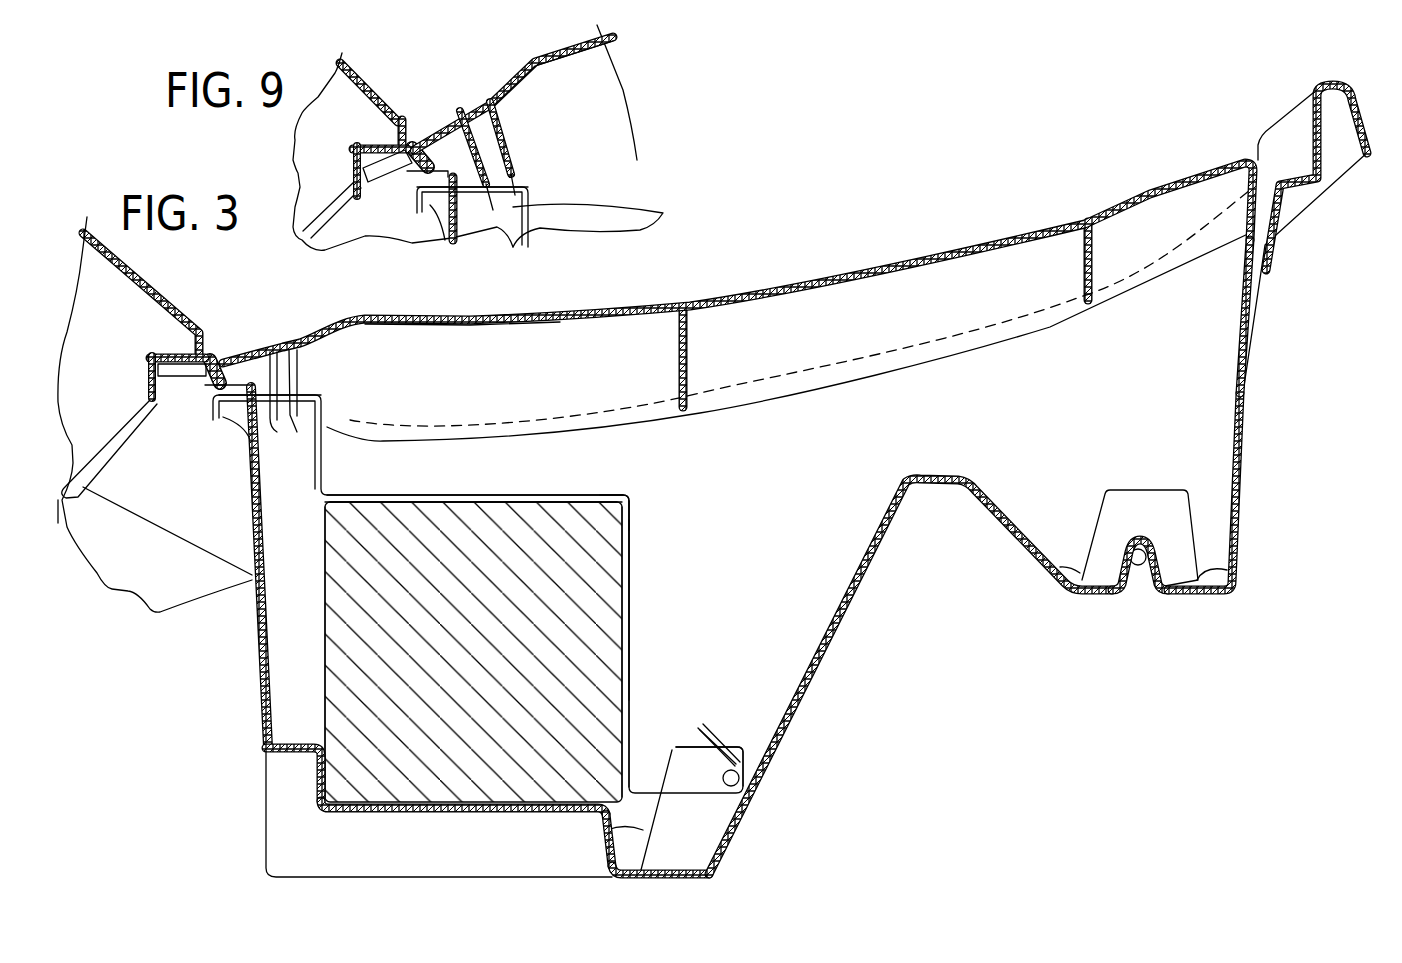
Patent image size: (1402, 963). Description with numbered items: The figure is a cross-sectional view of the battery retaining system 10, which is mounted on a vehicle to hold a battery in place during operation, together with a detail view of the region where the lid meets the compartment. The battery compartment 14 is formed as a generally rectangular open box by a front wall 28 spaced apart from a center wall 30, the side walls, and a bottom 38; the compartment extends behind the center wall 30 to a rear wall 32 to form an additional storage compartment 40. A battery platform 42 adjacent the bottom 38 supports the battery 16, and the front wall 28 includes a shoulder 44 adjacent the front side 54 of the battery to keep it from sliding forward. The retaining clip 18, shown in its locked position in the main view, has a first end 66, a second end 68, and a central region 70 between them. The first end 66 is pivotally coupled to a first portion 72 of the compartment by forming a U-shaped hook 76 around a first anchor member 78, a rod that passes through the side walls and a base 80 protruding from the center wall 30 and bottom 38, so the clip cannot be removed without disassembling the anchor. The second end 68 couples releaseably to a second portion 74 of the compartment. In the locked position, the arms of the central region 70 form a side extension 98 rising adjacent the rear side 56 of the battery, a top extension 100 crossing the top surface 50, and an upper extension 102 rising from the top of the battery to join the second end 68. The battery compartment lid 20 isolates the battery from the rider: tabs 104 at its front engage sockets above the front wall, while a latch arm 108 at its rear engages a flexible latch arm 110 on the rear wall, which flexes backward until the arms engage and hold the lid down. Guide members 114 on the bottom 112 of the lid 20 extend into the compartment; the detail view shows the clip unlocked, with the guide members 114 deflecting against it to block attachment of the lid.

In FIG. 3, the battery retaining system 10 is at (624, 291).
In FIG. 9, the battery retaining system 10 is at (548, 47).
In FIG. 3, the battery compartment 14 is at (692, 487).
In FIG. 3, the battery 16 is at (333, 591).
In FIG. 3, the retaining clip 18 is at (635, 491).
In FIG. 3, the battery compartment lid 20 is at (816, 282).
In FIG. 9, the battery compartment lid 20 is at (513, 67).
In FIG. 3, the front wall 28 is at (273, 560).
In FIG. 9, the front wall 28 is at (470, 232).
In FIG. 3, the center wall 30 is at (870, 544).
In FIG. 3, the rear wall 32 is at (1232, 343).
In FIG. 3, the bottom 38 is at (677, 882).
In FIG. 3, the storage compartment 40 is at (1127, 458).
In FIG. 3, the battery platform 42 is at (373, 812).
In FIG. 3, the shoulder 44 is at (300, 746).
In FIG. 3, the top surface 50 is at (460, 496).
In FIG. 3, the front side 54 is at (322, 675).
In FIG. 3, the rear side 56 is at (633, 565).
In FIG. 3, the first end 66 is at (700, 728).
In FIG. 3, the second end 68 is at (315, 395).
In FIG. 9, the second end 68 is at (521, 186).
In FIG. 3, the central region 70 is at (563, 496).
In FIG. 3, the first portion 72 is at (735, 735).
In FIG. 3, the second portion 74 is at (247, 418).
In FIG. 9, the second portion 74 is at (433, 203).
In FIG. 3, the hook 76 is at (744, 757).
In FIG. 3, the first anchor member 78 is at (723, 777).
In FIG. 3, the base 80 is at (645, 830).
In FIG. 3, the side extension 98 is at (632, 630).
In FIG. 3, the top extension 100 is at (483, 496).
In FIG. 3, the upper extension 102 is at (327, 457).
In FIG. 9, the upper extension 102 is at (541, 226).
In FIG. 3, the tabs 104 is at (173, 378).
In FIG. 9, the tabs 104 is at (378, 173).
In FIG. 3, the latch arm 108 is at (1240, 300).
In FIG. 3, the flexible latch arm 110 is at (1280, 220).
In FIG. 3, the bottom 112 is at (466, 326).
In FIG. 9, the bottom 112 is at (553, 63).
In FIG. 3, the guide members 114 is at (295, 434).
In FIG. 9, the guide members 114 is at (492, 168).